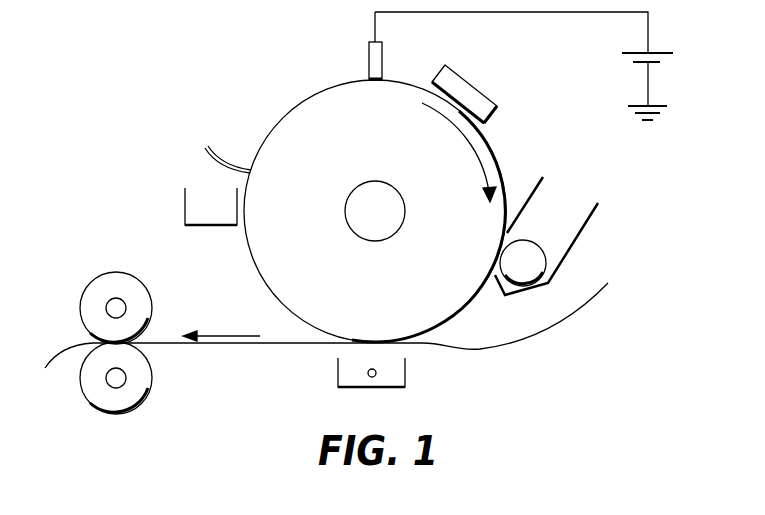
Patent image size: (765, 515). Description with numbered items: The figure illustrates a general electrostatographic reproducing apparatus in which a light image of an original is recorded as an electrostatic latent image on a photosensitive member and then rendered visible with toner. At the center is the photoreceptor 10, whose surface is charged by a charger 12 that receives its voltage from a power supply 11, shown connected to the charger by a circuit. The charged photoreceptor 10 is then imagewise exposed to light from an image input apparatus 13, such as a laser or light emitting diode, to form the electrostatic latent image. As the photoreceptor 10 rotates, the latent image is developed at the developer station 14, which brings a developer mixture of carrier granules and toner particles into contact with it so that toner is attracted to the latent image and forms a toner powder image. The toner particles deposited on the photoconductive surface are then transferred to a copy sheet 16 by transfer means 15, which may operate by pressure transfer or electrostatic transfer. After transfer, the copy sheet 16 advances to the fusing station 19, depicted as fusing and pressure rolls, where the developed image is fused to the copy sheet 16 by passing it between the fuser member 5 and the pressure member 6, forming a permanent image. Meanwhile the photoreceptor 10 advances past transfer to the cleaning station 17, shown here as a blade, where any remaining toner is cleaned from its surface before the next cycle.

The fuser member 5 is at (98, 276).
The pressure member 6 is at (97, 408).
The photoreceptor 10 is at (495, 152).
The power supply 11 is at (649, 44).
The charger 12 is at (369, 67).
The image input apparatus 13 is at (478, 88).
The developer station 14 is at (558, 208).
The transfer means 15 is at (405, 370).
The copy sheet 16 is at (567, 316).
The cleaning station 17 is at (193, 165).
The fusing station 19 is at (133, 331).